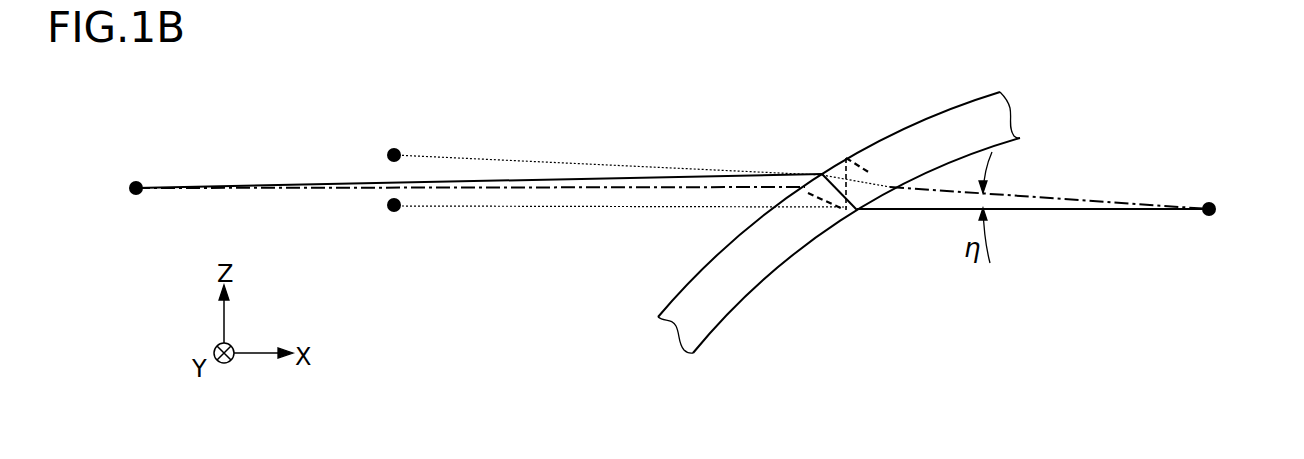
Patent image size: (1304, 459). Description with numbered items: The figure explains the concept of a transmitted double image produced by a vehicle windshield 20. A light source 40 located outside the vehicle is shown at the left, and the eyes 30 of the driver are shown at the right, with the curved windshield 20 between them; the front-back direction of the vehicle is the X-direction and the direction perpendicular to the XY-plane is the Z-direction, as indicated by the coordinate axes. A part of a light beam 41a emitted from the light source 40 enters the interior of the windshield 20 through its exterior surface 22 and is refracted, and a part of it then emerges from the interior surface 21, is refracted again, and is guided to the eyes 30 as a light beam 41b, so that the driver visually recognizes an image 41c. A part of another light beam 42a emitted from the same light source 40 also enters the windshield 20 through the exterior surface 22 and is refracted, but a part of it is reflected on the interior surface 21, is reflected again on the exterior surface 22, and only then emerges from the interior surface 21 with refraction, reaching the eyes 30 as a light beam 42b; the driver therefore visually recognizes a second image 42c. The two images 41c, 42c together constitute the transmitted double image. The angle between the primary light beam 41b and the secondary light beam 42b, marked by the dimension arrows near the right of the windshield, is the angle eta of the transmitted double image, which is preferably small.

The windshield 20 is at (874, 199).
The interior surface 21 is at (1022, 140).
The exterior surface 22 is at (923, 117).
The eyes 30 is at (1213, 205).
The light source 40 is at (142, 182).
The light beam 41a is at (360, 180).
The light beam 41b is at (1023, 210).
The image 41c is at (394, 212).
The light beam 42a is at (337, 192).
The light beam 42b is at (1037, 197).
The image 42c is at (394, 148).